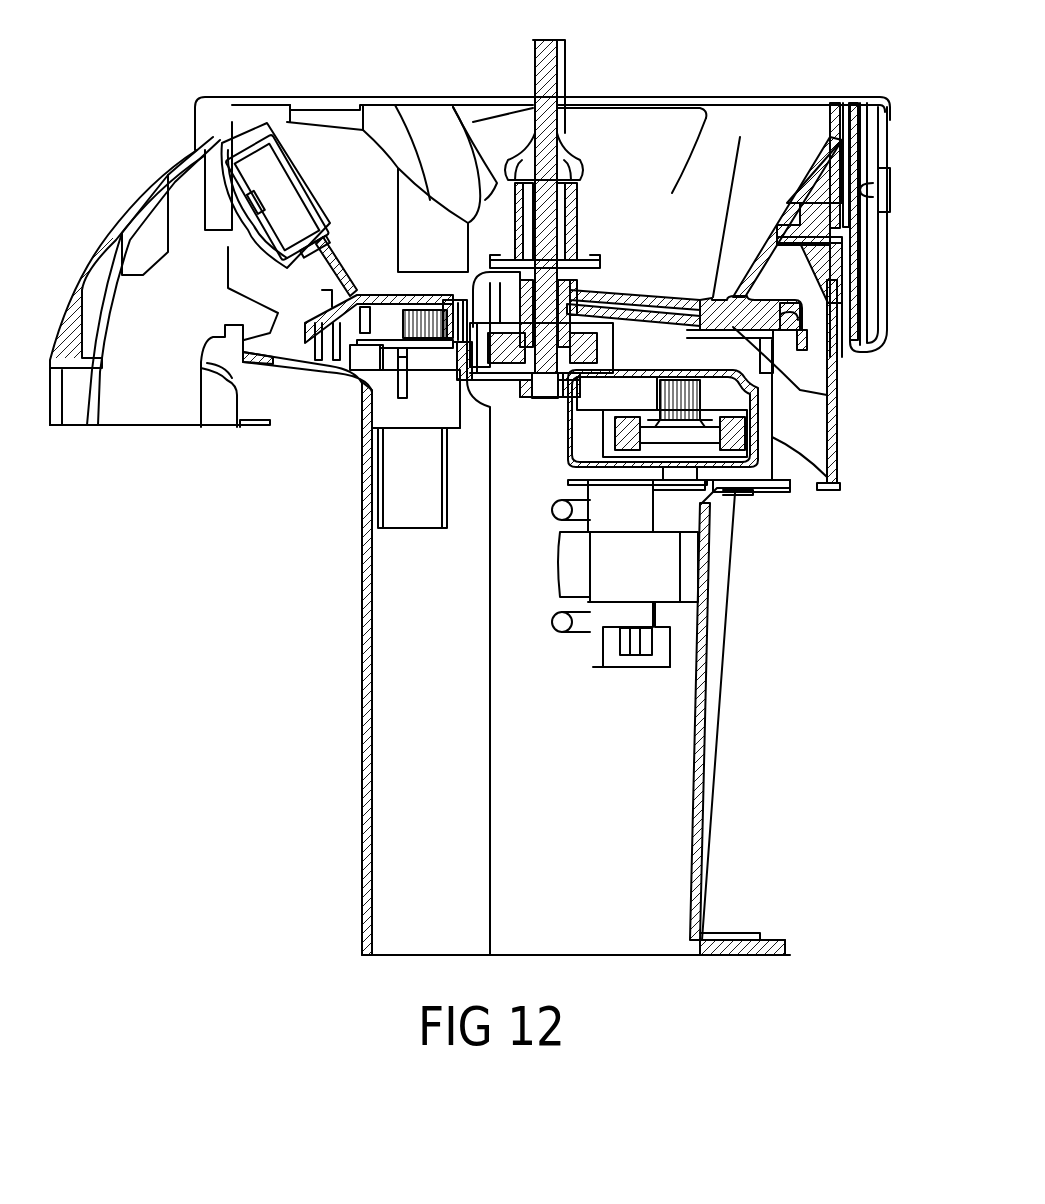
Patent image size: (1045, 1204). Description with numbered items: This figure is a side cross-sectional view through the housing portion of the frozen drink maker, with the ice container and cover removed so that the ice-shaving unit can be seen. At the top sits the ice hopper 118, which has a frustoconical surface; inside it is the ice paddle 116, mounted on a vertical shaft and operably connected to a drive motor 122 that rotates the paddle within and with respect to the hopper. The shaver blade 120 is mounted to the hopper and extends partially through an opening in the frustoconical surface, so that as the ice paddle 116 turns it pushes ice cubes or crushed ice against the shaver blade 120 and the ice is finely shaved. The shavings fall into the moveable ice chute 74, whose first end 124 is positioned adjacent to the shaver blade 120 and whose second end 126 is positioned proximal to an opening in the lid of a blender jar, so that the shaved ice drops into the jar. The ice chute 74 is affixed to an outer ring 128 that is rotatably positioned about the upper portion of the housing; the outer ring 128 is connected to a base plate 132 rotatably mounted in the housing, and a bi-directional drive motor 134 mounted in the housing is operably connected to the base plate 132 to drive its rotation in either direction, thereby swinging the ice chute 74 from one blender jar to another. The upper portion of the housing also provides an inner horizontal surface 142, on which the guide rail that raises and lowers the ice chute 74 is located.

The ice chute 74 is at (107, 237).
The ice paddle 116 is at (702, 100).
The ice hopper 118 is at (337, 157).
The shaver blade 120 is at (257, 162).
The drive motor 122 is at (665, 565).
The first end 124 is at (228, 140).
The second end 126 is at (127, 428).
The outer ring 128 is at (890, 137).
The base plate 132 is at (838, 395).
The drive motor 134 is at (410, 483).
The inner horizontal surface 142 is at (327, 367).